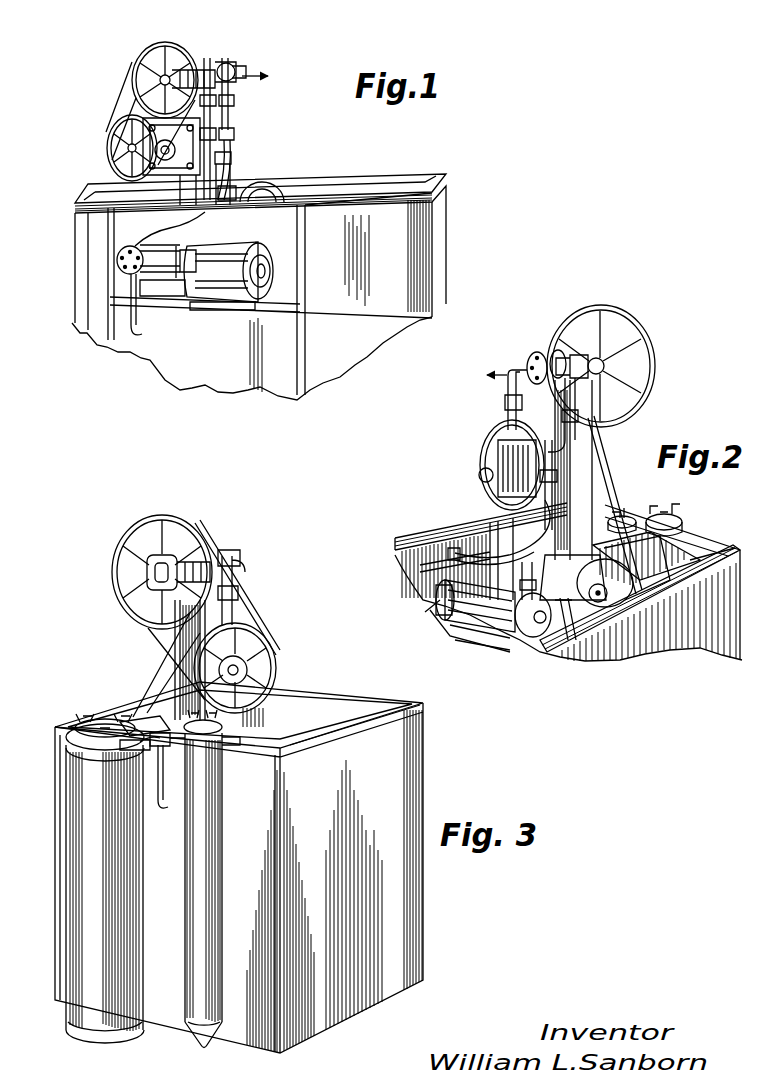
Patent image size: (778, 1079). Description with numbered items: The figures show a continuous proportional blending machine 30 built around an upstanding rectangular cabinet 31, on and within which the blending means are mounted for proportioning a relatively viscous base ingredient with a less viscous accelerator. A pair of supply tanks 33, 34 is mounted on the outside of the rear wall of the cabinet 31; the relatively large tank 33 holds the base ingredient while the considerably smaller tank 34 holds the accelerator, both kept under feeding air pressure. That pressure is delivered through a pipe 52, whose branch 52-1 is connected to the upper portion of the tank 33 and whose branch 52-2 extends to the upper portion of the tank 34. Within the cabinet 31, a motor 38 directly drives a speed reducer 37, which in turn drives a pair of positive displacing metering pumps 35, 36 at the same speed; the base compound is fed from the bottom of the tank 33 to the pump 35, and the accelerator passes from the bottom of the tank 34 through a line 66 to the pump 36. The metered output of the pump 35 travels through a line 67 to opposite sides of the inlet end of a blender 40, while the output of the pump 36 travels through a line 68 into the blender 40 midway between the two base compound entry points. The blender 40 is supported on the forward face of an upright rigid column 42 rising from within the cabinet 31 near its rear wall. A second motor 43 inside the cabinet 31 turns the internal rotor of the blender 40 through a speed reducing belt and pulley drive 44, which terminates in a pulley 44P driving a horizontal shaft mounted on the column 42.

In FIG. 1, the continuous proportional blending machine 30 is at (433, 270).
In FIG. 2, the continuous proportional blending machine 30 is at (415, 524).
In FIG. 3, the continuous proportional blending machine 30 is at (396, 752).
In FIG. 1, the cabinet 31 is at (400, 222).
In FIG. 2, the cabinet 31 is at (694, 642).
In FIG. 3, the cabinet 31 is at (376, 902).
In FIG. 2, the supply tank 33 is at (682, 528).
In FIG. 3, the supply tank 33 is at (92, 898).
In FIG. 2, the supply tank 34 is at (628, 508).
In FIG. 3, the supply tank 34 is at (204, 912).
In FIG. 1, the metering pump 35 is at (182, 246).
In FIG. 2, the metering pump 35 is at (530, 640).
In FIG. 1, the metering pump 36 is at (117, 270).
In FIG. 2, the metering pump 36 is at (438, 592).
In FIG. 1, the speed reducer 37 is at (125, 250).
In FIG. 2, the speed reducer 37 is at (493, 620).
In FIG. 1, the motor 38 is at (232, 272).
In FIG. 2, the motor 38 is at (478, 625).
In FIG. 1, the blender 40 is at (242, 52).
In FIG. 2, the blender 40 is at (536, 350).
In FIG. 1, the column 42 is at (228, 138).
In FIG. 2, the column 42 is at (588, 460).
In FIG. 3, the column 42 is at (150, 637).
In FIG. 1, the motor 43 is at (290, 188).
In FIG. 2, the motor 43 is at (630, 596).
In FIG. 3, the motor 43 is at (160, 716).
In FIG. 1, the belt and pulley drive 44 is at (126, 100).
In FIG. 2, the belt and pulley drive 44 is at (618, 438).
In FIG. 3, the belt and pulley drive 44 is at (157, 690).
In FIG. 1, the pulley 44P is at (160, 45).
In FIG. 2, the pulley 44P is at (640, 336).
In FIG. 3, the pulley 44P is at (112, 566).
In FIG. 3, the pipe 52 is at (158, 815).
In FIG. 3, the branch 52-1 is at (140, 766).
In FIG. 3, the branch 52-2 is at (180, 758).
In FIG. 1, the line 66 is at (128, 332).
In FIG. 1, the line 67 is at (226, 170).
In FIG. 2, the line 67 is at (570, 644).
In FIG. 1, the line 68 is at (236, 116).
In FIG. 2, the line 68 is at (470, 548).